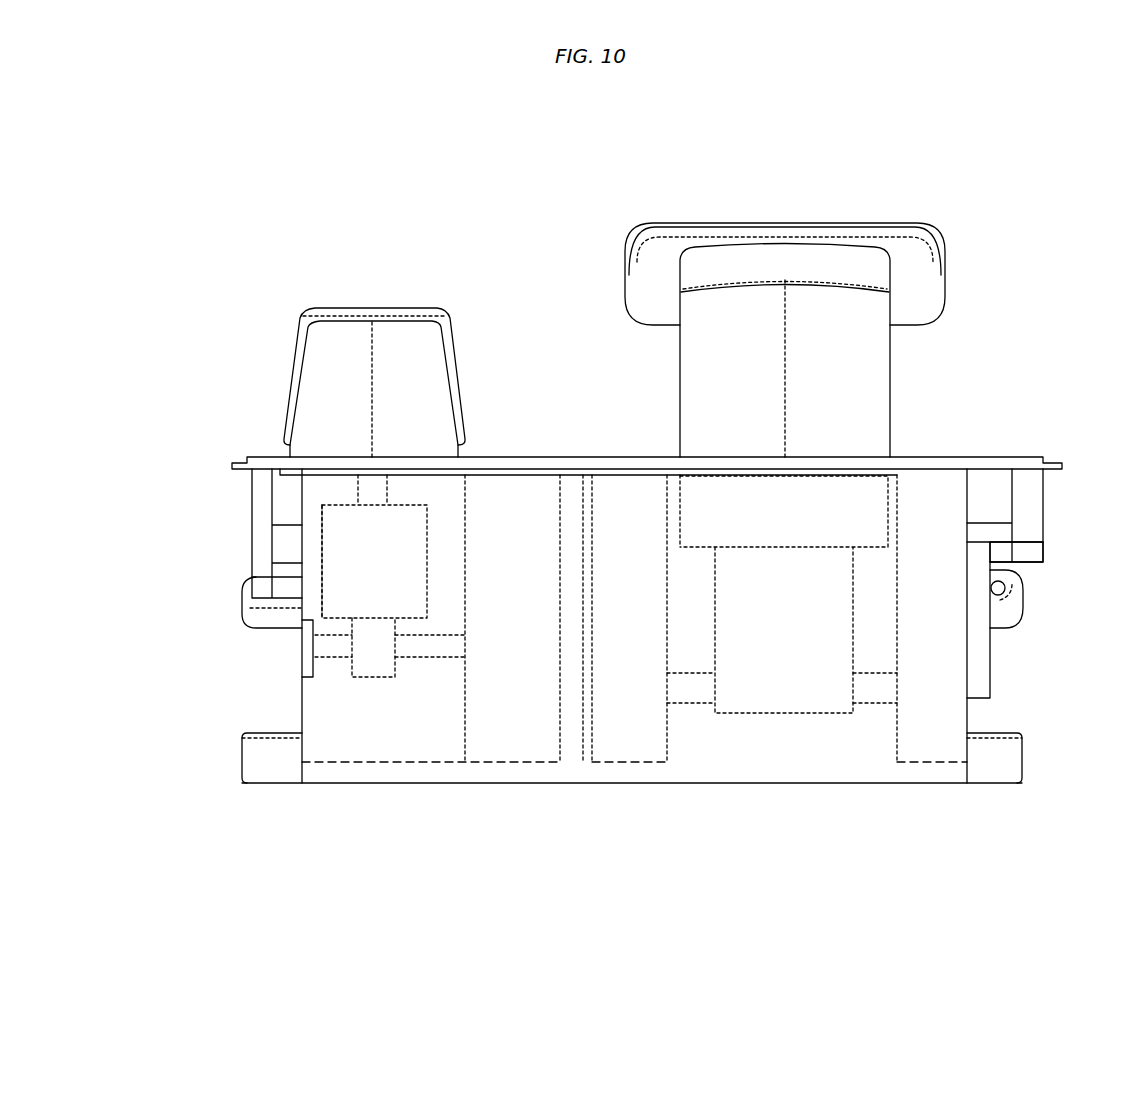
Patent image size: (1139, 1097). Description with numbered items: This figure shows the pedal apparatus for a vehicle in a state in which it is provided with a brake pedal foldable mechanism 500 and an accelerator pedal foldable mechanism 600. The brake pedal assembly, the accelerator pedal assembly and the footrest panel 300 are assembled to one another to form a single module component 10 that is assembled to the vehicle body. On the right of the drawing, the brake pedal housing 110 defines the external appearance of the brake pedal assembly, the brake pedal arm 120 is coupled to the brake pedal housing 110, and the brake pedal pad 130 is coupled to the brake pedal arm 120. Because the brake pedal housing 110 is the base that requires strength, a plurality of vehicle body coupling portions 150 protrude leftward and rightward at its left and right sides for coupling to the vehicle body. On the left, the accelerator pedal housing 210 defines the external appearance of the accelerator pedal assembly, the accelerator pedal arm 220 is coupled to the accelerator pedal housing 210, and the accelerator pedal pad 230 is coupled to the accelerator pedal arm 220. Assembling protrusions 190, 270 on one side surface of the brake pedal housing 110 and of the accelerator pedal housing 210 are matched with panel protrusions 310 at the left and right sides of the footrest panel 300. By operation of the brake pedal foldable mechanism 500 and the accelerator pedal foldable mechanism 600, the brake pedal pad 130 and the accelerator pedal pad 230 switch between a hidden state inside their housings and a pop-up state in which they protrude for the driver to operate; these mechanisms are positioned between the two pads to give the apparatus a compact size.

The single module component 10 is at (896, 372).
The brake pedal housing 110 is at (967, 712).
The brake pedal arm 120 is at (740, 317).
The brake pedal pad 130 is at (910, 258).
The vehicle body coupling portions 150 is at (252, 612).
The assembling protrusion 190 is at (1005, 543).
The accelerator pedal housing 210 is at (302, 703).
The accelerator pedal arm 220 is at (367, 555).
The accelerator pedal pad 230 is at (355, 322).
The assembling protrusion 270 is at (283, 582).
The footrest panel 300 is at (573, 457).
The panel protrusions 310 is at (260, 510).
The brake pedal foldable mechanism 500 is at (667, 723).
The accelerator pedal foldable mechanism 600 is at (465, 722).